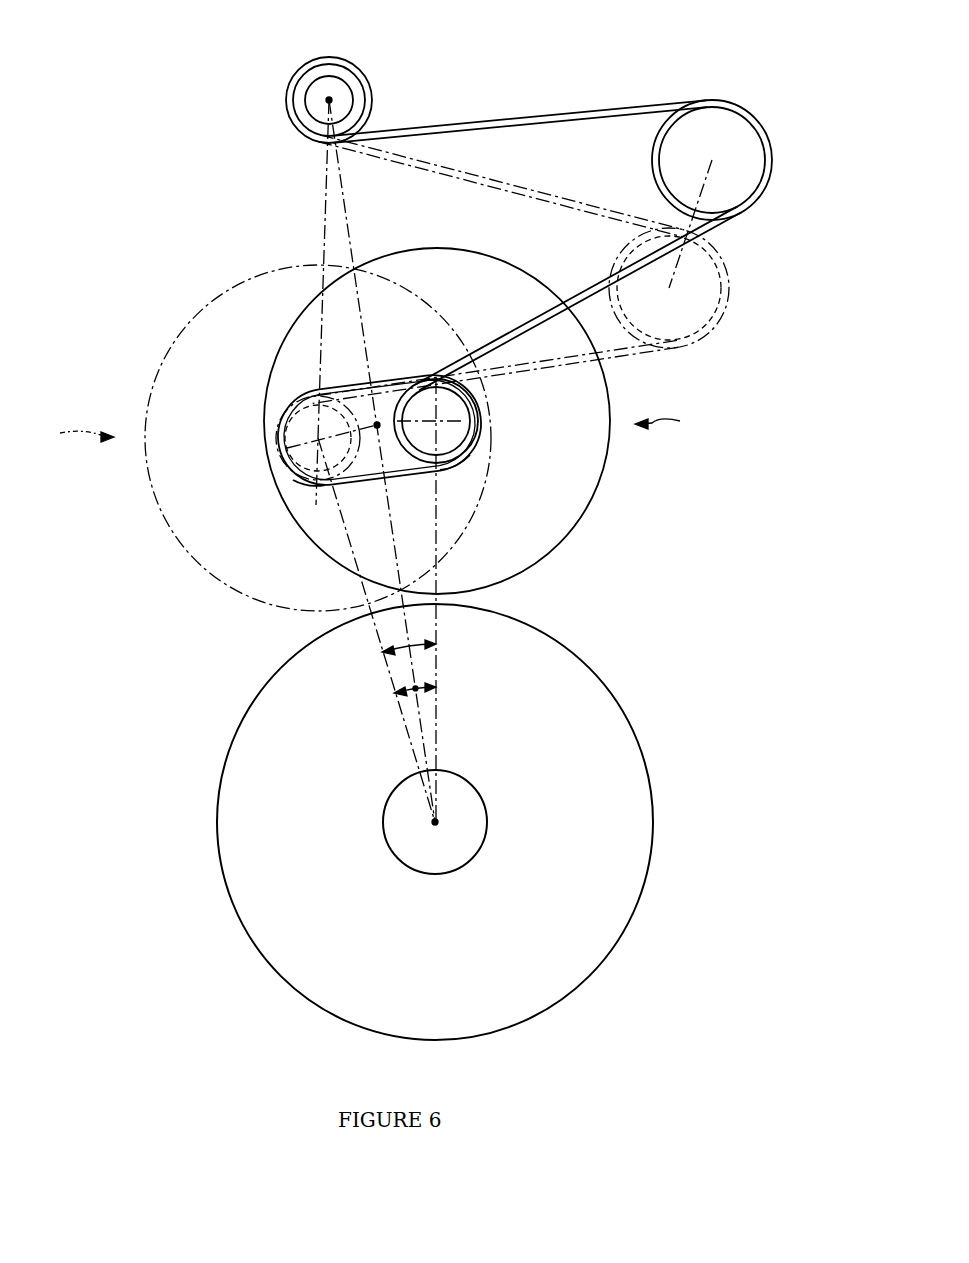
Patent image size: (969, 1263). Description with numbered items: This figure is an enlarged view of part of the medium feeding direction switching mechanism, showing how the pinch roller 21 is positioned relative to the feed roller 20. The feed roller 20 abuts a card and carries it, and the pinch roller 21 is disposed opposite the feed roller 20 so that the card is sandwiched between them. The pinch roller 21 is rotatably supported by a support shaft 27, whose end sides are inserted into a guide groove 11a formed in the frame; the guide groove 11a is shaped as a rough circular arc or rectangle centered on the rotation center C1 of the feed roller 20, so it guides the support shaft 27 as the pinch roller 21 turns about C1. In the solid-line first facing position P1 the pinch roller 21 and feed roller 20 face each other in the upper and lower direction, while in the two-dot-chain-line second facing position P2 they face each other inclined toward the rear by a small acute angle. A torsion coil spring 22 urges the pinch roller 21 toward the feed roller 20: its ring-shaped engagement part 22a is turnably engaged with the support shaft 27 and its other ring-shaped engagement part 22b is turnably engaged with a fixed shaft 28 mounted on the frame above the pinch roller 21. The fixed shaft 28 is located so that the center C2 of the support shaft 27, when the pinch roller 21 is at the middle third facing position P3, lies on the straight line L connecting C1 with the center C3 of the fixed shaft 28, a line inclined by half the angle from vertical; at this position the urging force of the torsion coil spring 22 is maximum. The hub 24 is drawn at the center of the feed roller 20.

The feed roller 20 is at (436, 1040).
The hub of gear 24 is at (438, 875).
The pinch roller 21 is at (598, 495).
The torsion coil spring 22 is at (590, 100).
The engagement part 22a is at (278, 442).
The engagement part 22b is at (327, 57).
The fixed shaft 28 is at (356, 68).
The support shaft 27 is at (305, 488).
The guide groove 11a is at (372, 477).
The rotation center of the feed roller C1 is at (438, 821).
The center of the support shaft C2 is at (378, 423).
The center of the fixed shaft C3 is at (333, 100).
The first facing position P1 is at (673, 424).
The second facing position P2 is at (69, 439).
The third facing position P3 is at (335, 461).
The straight line L is at (343, 208).